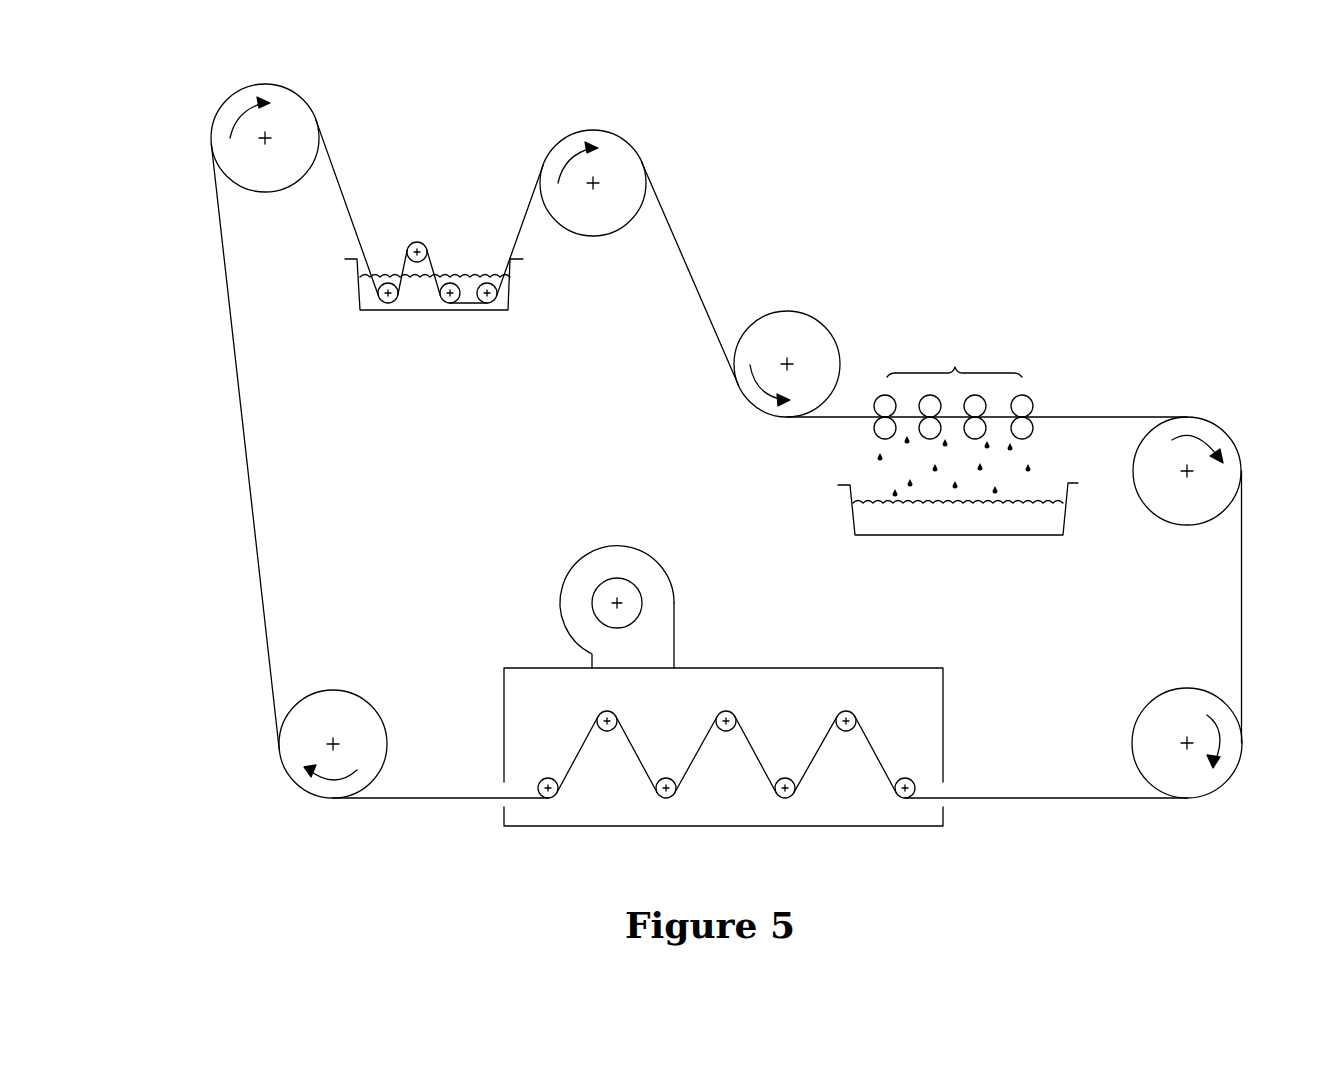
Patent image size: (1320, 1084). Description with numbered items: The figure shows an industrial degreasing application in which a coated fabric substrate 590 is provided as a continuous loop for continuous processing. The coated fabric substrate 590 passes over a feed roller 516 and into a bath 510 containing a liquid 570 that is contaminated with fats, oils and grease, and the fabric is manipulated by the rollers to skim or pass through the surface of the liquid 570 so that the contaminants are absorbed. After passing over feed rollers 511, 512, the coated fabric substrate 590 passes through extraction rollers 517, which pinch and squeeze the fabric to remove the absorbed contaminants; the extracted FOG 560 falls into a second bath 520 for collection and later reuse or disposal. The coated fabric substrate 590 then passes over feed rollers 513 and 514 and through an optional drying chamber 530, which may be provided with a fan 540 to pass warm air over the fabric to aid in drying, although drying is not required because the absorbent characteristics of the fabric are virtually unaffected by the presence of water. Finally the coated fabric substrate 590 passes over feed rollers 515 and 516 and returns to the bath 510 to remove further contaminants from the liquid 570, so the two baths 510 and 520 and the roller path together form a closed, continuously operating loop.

The coated fabric substrate 590 is at (243, 455).
The feed roller 516 is at (277, 193).
The bath 510 is at (403, 313).
The liquid 570 is at (510, 303).
The feed roller 511 is at (637, 150).
The feed roller 512 is at (817, 315).
The extraction rollers 517 is at (953, 417).
The feed roller 513 is at (1232, 437).
The bath 520 is at (902, 537).
The extracted FOG 560 is at (1037, 520).
The fan 540 is at (675, 630).
The drying chamber 530 is at (925, 665).
The feed roller 514 is at (1162, 692).
The feed roller 515 is at (368, 702).